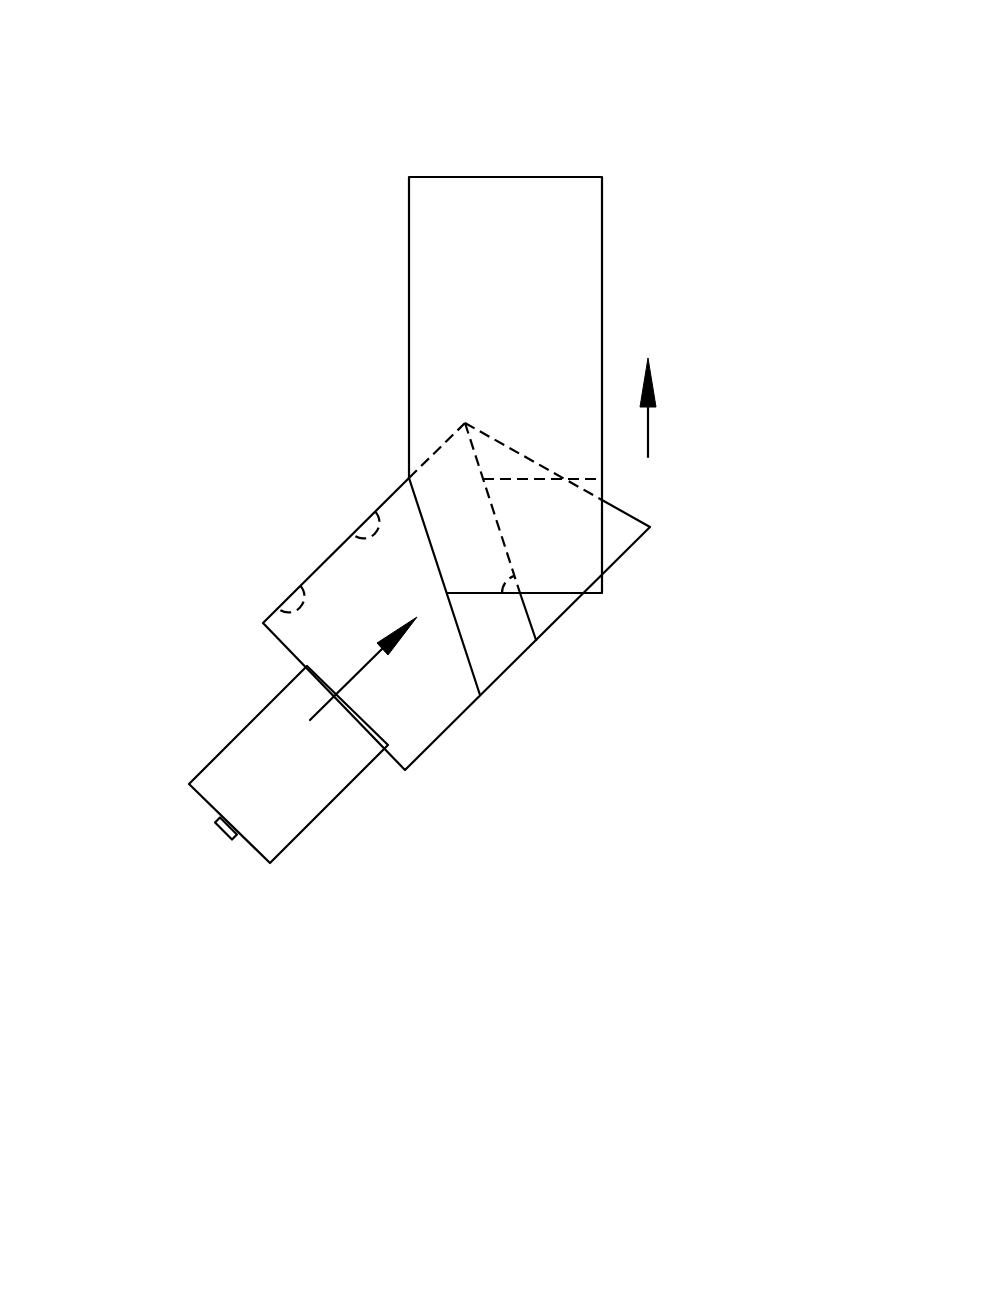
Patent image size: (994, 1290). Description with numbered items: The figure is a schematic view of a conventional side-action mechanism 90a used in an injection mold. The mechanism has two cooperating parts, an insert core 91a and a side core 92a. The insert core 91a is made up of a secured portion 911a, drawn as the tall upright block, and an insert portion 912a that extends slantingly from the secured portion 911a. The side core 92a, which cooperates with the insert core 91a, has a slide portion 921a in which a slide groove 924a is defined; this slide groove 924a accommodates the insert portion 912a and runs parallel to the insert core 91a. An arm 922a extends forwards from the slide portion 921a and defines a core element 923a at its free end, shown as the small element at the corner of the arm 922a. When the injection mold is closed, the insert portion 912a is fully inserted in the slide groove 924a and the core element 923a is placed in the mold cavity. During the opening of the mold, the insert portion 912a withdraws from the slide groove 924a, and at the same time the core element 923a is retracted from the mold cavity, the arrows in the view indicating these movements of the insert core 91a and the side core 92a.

The side-action mechanism 90a is at (217, 47).
The insert core 91a is at (707, 262).
The secured portion 911a is at (527, 337).
The insert portion 912a is at (470, 547).
The side core 92a is at (280, 444).
The slide portion 921a is at (332, 602).
The arm 922a is at (263, 743).
The core element 923a is at (218, 823).
The slide groove 924a is at (477, 613).